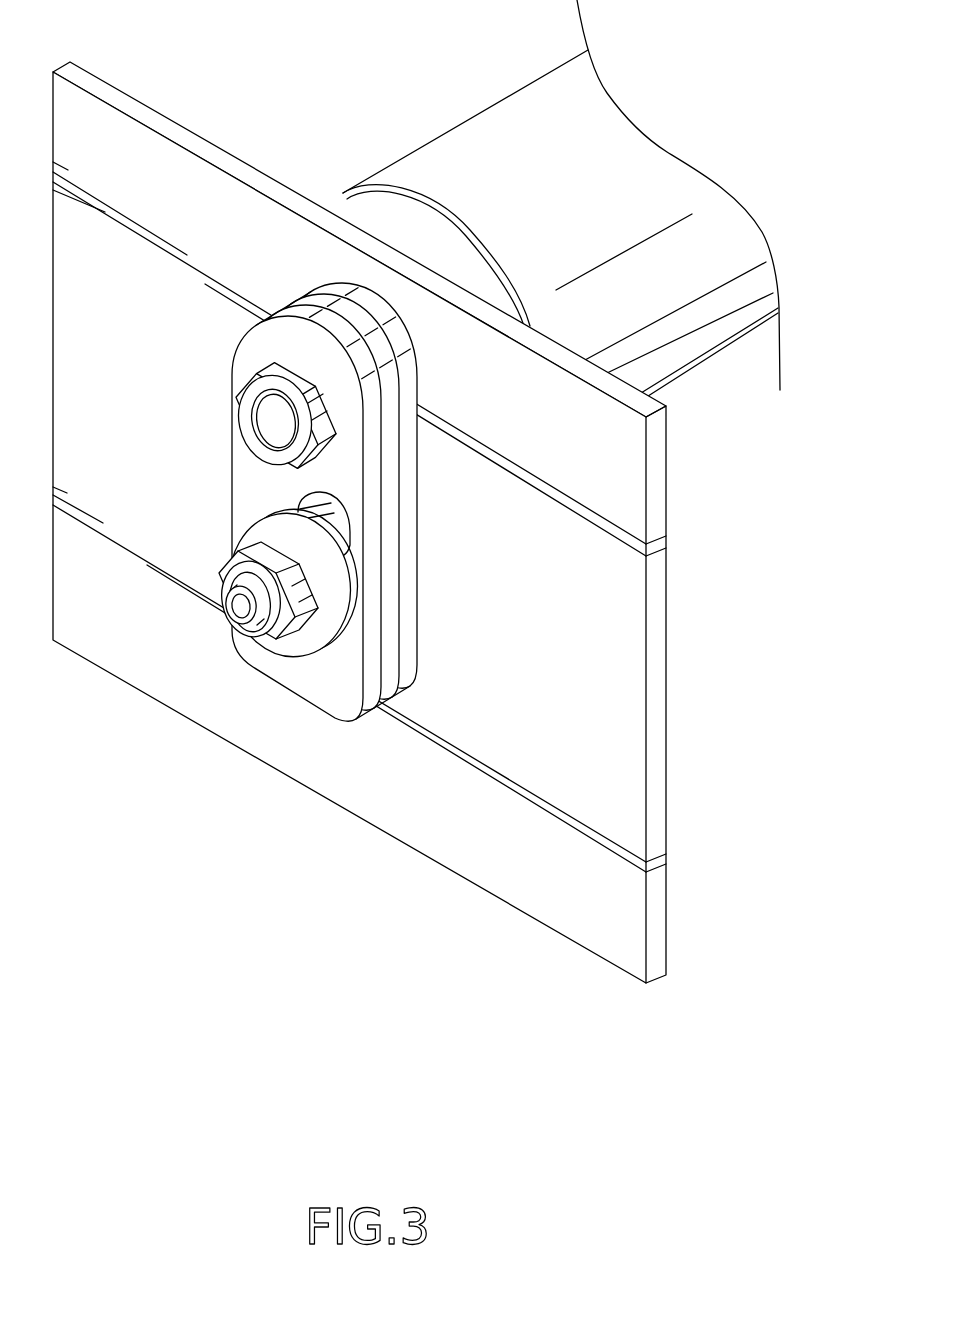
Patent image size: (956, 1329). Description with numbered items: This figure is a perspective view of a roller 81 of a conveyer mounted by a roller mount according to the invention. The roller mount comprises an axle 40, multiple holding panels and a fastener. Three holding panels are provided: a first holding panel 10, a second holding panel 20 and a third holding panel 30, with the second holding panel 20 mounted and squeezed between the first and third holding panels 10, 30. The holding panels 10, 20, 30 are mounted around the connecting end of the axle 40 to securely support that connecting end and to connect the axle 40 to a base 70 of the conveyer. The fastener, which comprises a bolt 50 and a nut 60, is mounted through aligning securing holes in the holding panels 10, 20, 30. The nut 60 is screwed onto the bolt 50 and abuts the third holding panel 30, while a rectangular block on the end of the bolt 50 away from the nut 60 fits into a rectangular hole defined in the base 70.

The first holding panel 10 is at (327, 292).
The second holding panel 20 is at (297, 302).
The third holding panel 30 is at (250, 345).
The axle 40 is at (247, 383).
The bolt 50 is at (243, 612).
The nut 60 is at (317, 609).
The base 70 is at (630, 580).
The roller 81 is at (708, 342).